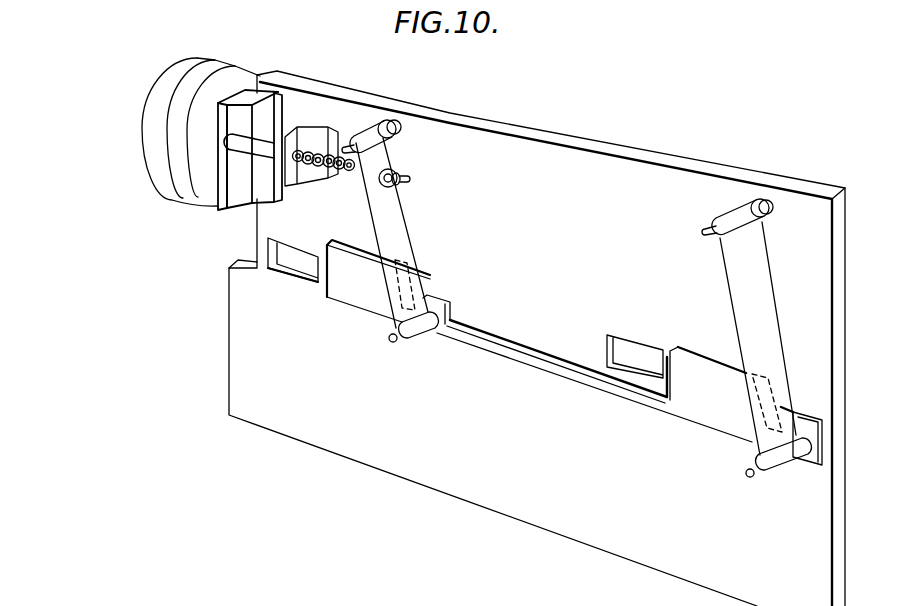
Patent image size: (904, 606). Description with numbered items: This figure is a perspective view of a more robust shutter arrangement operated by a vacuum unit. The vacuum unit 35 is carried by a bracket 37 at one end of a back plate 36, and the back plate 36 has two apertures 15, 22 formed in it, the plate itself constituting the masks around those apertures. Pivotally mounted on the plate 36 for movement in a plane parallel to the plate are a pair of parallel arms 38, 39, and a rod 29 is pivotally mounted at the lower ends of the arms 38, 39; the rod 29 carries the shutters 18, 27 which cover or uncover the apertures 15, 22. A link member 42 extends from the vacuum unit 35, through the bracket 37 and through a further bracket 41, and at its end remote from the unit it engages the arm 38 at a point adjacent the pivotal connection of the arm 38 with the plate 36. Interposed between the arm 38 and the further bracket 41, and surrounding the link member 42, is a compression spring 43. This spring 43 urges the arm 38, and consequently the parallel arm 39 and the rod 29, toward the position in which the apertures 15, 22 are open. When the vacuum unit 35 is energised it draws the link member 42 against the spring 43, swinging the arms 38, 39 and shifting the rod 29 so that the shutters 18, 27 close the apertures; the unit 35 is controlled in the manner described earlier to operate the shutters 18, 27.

The aperture 15 is at (620, 358).
The shutter 18 is at (708, 418).
The aperture 22 is at (302, 258).
The shutter 27 is at (376, 300).
The rod 29 is at (532, 363).
The vacuum unit 35 is at (231, 55).
The back plate 36 is at (527, 148).
The bracket 37 is at (263, 110).
The arm 38 is at (396, 233).
The arm 39 is at (748, 275).
The further bracket 41 is at (320, 134).
The link member 42 is at (264, 149).
The compression spring 43 is at (343, 177).